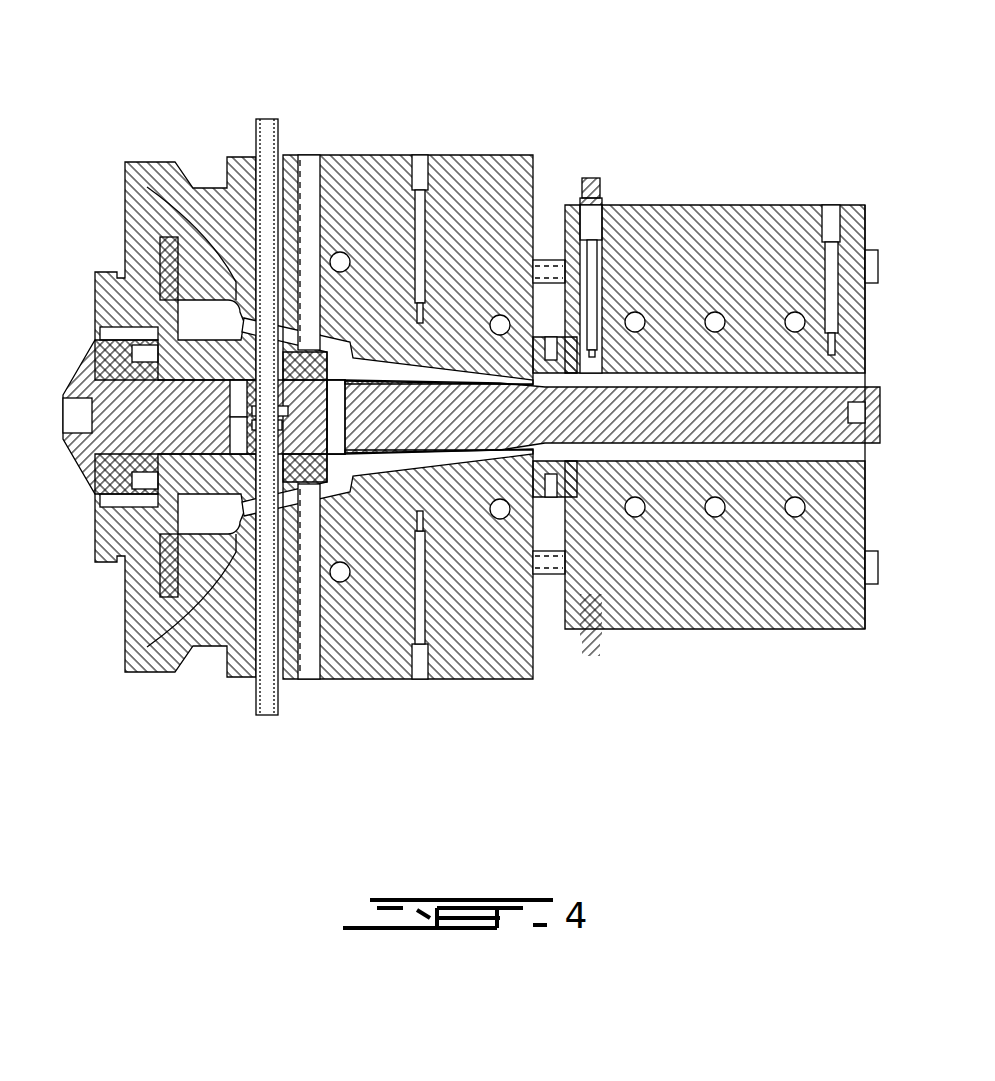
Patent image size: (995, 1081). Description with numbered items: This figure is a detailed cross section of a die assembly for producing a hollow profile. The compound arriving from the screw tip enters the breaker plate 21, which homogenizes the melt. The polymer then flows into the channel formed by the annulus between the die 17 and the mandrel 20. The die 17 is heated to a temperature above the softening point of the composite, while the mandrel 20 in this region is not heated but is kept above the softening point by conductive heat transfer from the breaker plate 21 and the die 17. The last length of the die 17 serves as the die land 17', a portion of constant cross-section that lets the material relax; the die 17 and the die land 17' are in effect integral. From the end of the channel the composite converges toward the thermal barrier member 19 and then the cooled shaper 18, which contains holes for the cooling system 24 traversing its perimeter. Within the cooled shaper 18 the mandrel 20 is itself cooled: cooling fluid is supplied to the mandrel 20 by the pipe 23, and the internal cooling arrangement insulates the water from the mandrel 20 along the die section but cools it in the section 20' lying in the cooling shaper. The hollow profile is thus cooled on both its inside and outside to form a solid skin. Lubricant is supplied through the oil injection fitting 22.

The die 17 is at (175, 456).
The die land 17' is at (424, 594).
The cooled shaper 18 is at (755, 228).
The thermal barrier member 19 is at (525, 480).
The mandrel 20 is at (181, 350).
The cooled section of mandrel 20' is at (630, 384).
The breaker plate 21 is at (137, 535).
The oil injection fitting 22 is at (587, 177).
The pipe 23 is at (275, 118).
The cooling system holes 24 is at (795, 518).